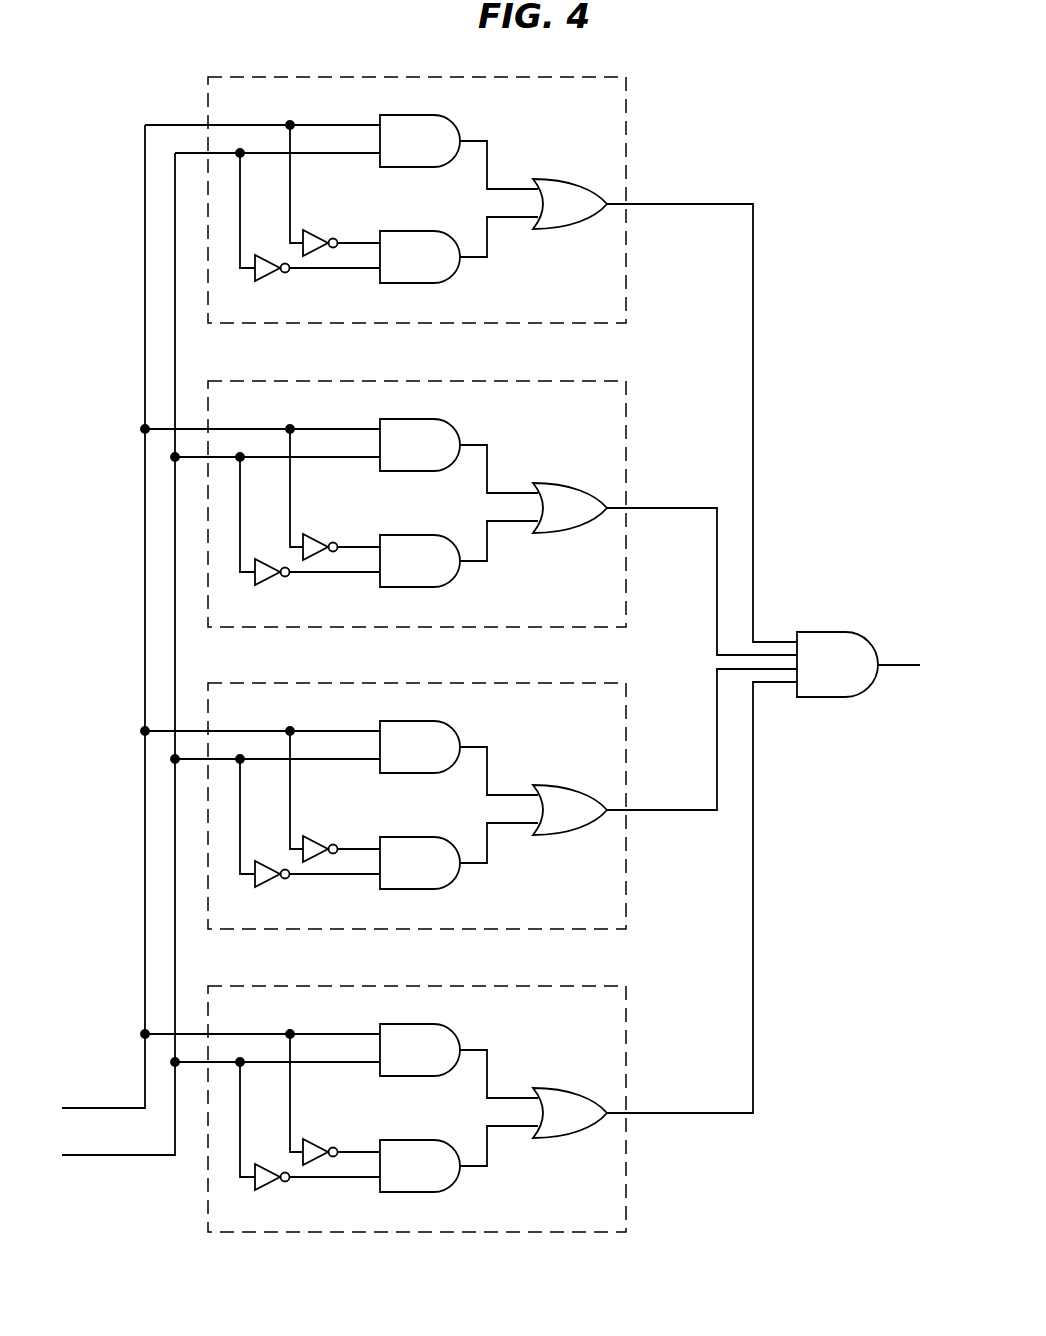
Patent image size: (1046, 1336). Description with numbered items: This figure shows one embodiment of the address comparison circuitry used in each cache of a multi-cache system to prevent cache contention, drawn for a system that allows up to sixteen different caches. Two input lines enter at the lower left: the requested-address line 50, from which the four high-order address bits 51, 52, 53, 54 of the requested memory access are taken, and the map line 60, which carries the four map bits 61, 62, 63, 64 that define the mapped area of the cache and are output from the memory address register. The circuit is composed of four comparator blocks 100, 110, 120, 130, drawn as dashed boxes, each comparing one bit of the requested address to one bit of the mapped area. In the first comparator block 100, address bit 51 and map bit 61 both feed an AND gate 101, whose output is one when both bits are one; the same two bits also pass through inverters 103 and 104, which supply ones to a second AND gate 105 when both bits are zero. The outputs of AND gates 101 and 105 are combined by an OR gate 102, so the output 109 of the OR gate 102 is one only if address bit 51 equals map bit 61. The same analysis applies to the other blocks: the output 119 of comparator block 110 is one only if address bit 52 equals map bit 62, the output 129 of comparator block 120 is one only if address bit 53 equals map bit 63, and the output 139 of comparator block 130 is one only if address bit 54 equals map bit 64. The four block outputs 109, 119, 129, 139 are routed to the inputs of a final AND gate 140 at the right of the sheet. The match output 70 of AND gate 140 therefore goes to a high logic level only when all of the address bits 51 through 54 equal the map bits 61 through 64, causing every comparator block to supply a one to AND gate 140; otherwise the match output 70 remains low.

The first input signal line 50 is at (78, 1107).
The second input signal line 60 is at (78, 1154).
The high-order address bit 51 is at (228, 125).
The high-order address bit 52 is at (228, 429).
The high-order address bit 53 is at (228, 731).
The high-order address bit 54 is at (228, 1034).
The map bit 61 is at (195, 157).
The map bit 62 is at (195, 461).
The map bit 63 is at (195, 763).
The map bit 64 is at (198, 1066).
The comparator block 100 is at (331, 77).
The comparator block 110 is at (331, 381).
The comparator block 120 is at (331, 683).
The comparator block 130 is at (331, 986).
The AND gate 101 is at (409, 115).
The OR gate 102 is at (554, 179).
The inverter 103 is at (312, 231).
The inverter 104 is at (262, 282).
The AND gate 105 is at (409, 231).
The output of OR gate 109 is at (640, 204).
The output of comparator block 119 is at (640, 508).
The output of comparator block 129 is at (640, 810).
The output of comparator block 139 is at (640, 1113).
The AND gate 140 is at (822, 632).
The match output 70 is at (893, 665).